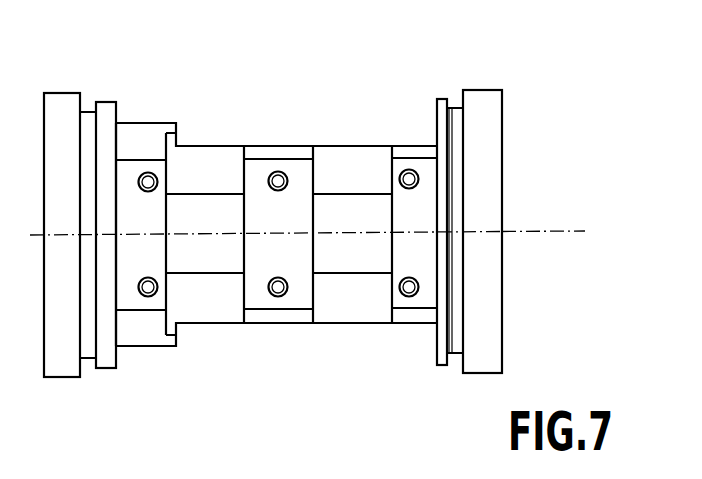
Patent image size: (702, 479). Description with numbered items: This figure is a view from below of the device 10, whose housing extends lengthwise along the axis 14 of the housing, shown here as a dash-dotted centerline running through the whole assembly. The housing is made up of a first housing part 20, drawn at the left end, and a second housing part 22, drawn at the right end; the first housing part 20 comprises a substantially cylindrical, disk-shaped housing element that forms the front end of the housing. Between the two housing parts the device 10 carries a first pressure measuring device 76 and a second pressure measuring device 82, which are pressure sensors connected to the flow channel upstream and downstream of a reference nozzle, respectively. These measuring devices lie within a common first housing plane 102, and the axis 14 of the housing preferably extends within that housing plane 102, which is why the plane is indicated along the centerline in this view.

The device 10 is at (226, 85).
The axis of the housing 14 is at (484, 232).
The first housing part 20 is at (88, 392).
The second housing part 22 is at (425, 355).
The first pressure measuring device 76 is at (223, 255).
The second pressure measuring device 82 is at (355, 247).
The first housing plane 102 is at (540, 232).